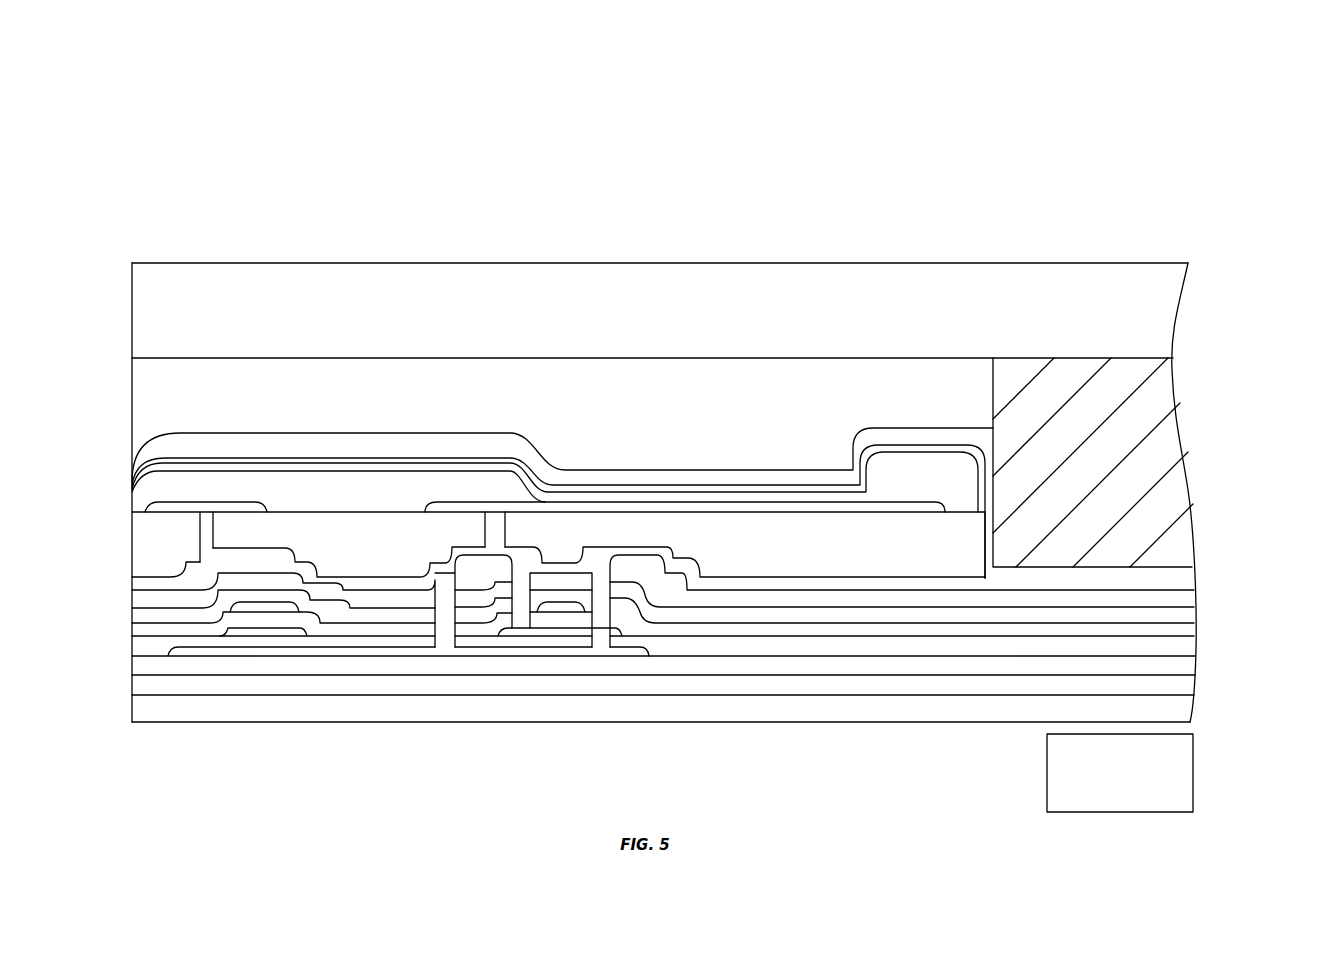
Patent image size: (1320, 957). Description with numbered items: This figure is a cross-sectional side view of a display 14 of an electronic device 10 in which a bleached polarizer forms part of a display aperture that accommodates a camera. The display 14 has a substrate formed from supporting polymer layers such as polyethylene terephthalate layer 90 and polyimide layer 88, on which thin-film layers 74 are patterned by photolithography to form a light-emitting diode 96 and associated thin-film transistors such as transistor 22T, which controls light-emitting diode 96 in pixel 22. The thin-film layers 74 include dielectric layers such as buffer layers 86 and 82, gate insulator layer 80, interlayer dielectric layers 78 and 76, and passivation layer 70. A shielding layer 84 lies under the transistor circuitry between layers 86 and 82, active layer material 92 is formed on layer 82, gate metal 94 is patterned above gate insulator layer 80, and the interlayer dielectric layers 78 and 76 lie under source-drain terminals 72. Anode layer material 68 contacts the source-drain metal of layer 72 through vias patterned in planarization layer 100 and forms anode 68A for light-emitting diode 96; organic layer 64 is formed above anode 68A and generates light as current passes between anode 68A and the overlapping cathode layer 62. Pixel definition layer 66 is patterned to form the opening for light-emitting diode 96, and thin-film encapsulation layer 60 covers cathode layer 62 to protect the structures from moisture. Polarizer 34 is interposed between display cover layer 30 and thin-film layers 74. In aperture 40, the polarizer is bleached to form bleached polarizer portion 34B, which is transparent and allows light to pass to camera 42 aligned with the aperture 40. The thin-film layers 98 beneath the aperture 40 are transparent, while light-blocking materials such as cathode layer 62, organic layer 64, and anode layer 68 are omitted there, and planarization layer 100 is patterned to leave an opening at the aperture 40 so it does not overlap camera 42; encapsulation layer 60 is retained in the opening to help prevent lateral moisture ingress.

The electronic device 10 is at (168, 126).
The display 14 is at (1252, 263).
The pixel 22 is at (777, 229).
The transistor 22T is at (688, 546).
The display cover layer 30 is at (131, 302).
The polarizer 34 is at (131, 360).
The bleached polarizer portion 34B is at (1127, 372).
The aperture 40 is at (1013, 733).
The camera 42 is at (1055, 795).
The thin-film encapsulation layer 60 is at (172, 446).
The cathode layer 62 is at (160, 466).
The organic layer 64 is at (155, 472).
The pixel definition layer 66 is at (158, 490).
The anode layer material 68 is at (160, 510).
The anode 68A is at (533, 505).
The passivation layer 70 is at (180, 577).
The source-drain terminals 72 is at (185, 585).
The thin-film layers 74 is at (68, 447).
The interlayer dielectric layer 76 is at (140, 590).
The interlayer dielectric layer 78 is at (140, 608).
The gate insulator layer 80 is at (140, 623).
The buffer layer 82 is at (170, 650).
The shielding layer 84 is at (140, 658).
The buffer layer 86 is at (140, 677).
The polyimide layer 88 is at (140, 697).
The polyethylene terephthalate layer 90 is at (140, 722).
The active layer material 92 is at (238, 631).
The gate metal 94 is at (278, 609).
The light-emitting diode 96 is at (850, 462).
The thin-film layers 98 is at (1218, 567).
The planarization layer 100 is at (178, 540).